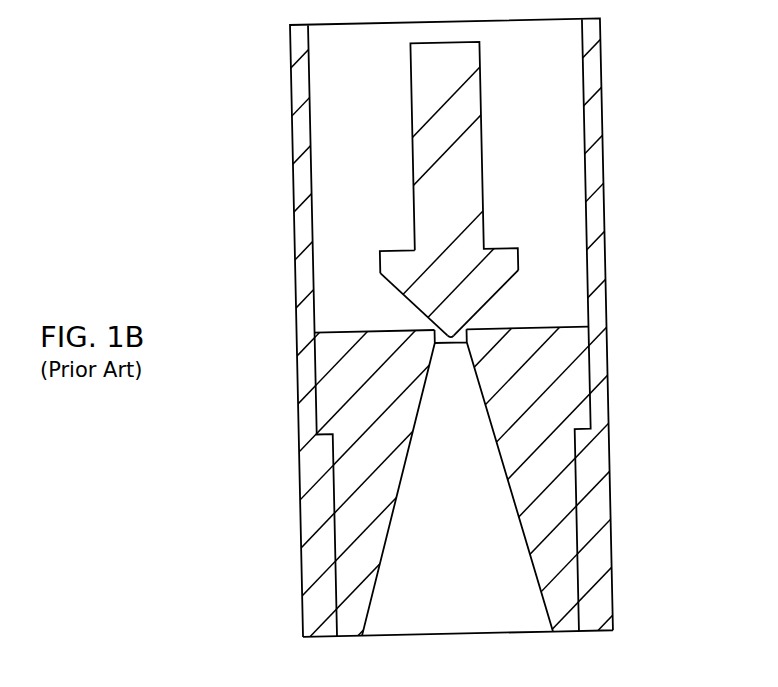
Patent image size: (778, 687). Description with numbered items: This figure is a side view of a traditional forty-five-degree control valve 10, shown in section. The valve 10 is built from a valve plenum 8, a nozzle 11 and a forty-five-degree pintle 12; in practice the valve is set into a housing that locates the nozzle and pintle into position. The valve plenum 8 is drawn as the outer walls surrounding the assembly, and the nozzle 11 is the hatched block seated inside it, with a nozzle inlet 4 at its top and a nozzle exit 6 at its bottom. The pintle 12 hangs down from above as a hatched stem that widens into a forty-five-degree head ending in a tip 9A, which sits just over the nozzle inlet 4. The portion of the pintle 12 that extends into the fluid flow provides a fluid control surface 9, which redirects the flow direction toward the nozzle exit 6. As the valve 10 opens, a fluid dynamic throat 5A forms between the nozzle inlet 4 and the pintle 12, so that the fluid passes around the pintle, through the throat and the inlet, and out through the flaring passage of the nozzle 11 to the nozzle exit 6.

The 45-degree valve 10 is at (644, 83).
The valve plenum 8 is at (330, 138).
The 45-degree pintle 12 is at (457, 278).
The fluid control surface 9 is at (514, 277).
The tip 9A is at (462, 328).
The fluid dynamic throat 5A is at (448, 333).
The nozzle inlet 4 is at (405, 331).
The nozzle 11 is at (372, 446).
The nozzle exit 6 is at (502, 632).